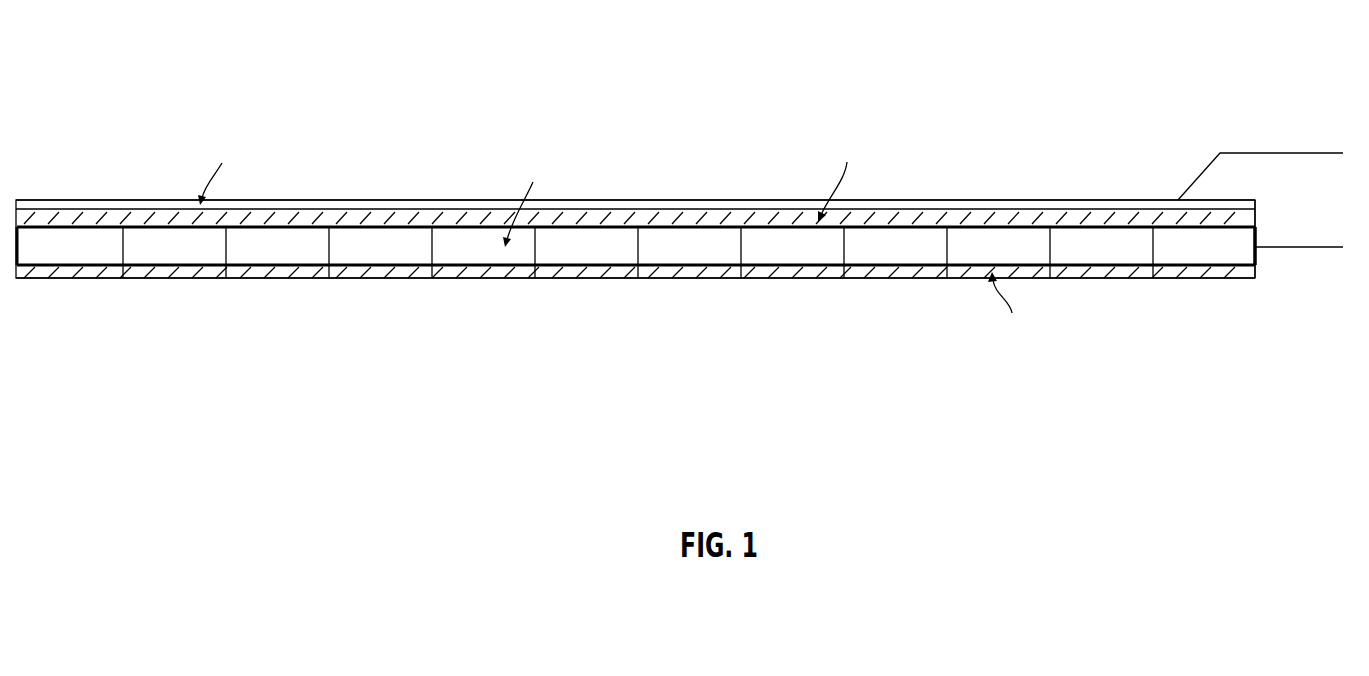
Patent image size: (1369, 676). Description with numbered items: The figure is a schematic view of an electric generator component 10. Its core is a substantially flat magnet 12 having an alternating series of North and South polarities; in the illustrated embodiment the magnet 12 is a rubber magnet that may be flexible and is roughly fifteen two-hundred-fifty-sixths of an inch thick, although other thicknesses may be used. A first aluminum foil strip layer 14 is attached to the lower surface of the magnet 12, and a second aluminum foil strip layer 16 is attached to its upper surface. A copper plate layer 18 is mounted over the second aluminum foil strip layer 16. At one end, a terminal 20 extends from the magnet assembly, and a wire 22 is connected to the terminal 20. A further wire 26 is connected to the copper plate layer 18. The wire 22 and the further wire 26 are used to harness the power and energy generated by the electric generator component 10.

The electric generator component 10 is at (100, 92).
The magnet 12 is at (710, 253).
The first aluminum foil strip layer 14 is at (70, 273).
The second aluminum foil strip layer 16 is at (348, 228).
The copper plate layer 18 is at (322, 200).
The terminal 20 is at (1263, 262).
The wire 22 is at (1292, 247).
The further wire 26 is at (1292, 153).